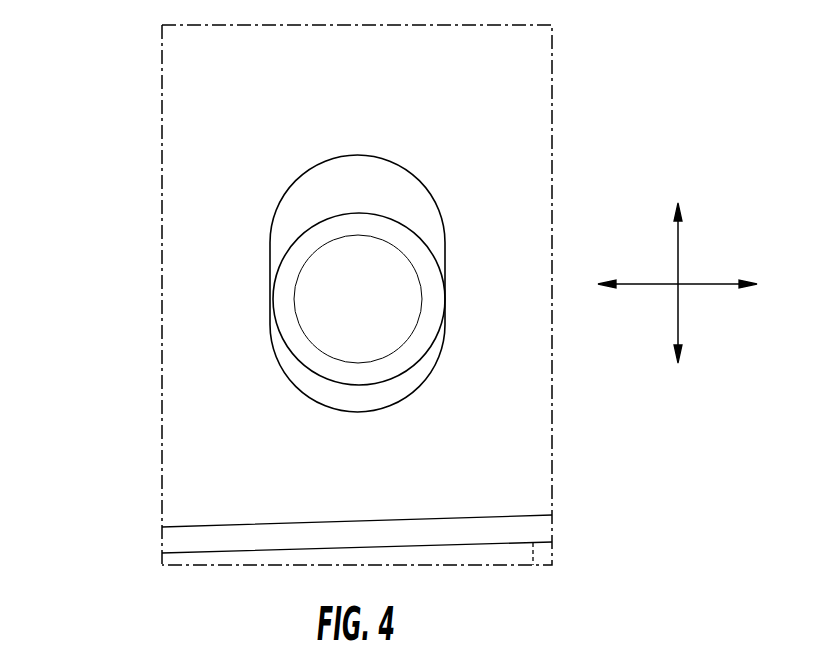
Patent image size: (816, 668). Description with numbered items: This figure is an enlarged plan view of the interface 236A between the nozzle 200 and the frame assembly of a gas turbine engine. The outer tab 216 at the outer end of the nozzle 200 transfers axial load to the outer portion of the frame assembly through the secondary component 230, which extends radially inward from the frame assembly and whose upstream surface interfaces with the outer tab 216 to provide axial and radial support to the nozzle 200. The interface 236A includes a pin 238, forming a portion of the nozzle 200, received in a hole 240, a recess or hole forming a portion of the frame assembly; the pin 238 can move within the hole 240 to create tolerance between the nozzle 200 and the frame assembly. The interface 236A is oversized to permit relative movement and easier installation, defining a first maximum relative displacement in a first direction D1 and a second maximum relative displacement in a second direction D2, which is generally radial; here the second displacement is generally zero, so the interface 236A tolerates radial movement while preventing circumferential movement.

The nozzle 200 is at (365, 249).
The outer tab 216 is at (388, 193).
The secondary component 230 is at (190, 425).
The interface 236A is at (162, 229).
The pin 238 is at (325, 262).
The hole 240 is at (423, 379).
The first direction D1 is at (678, 247).
The second direction D2 is at (706, 286).